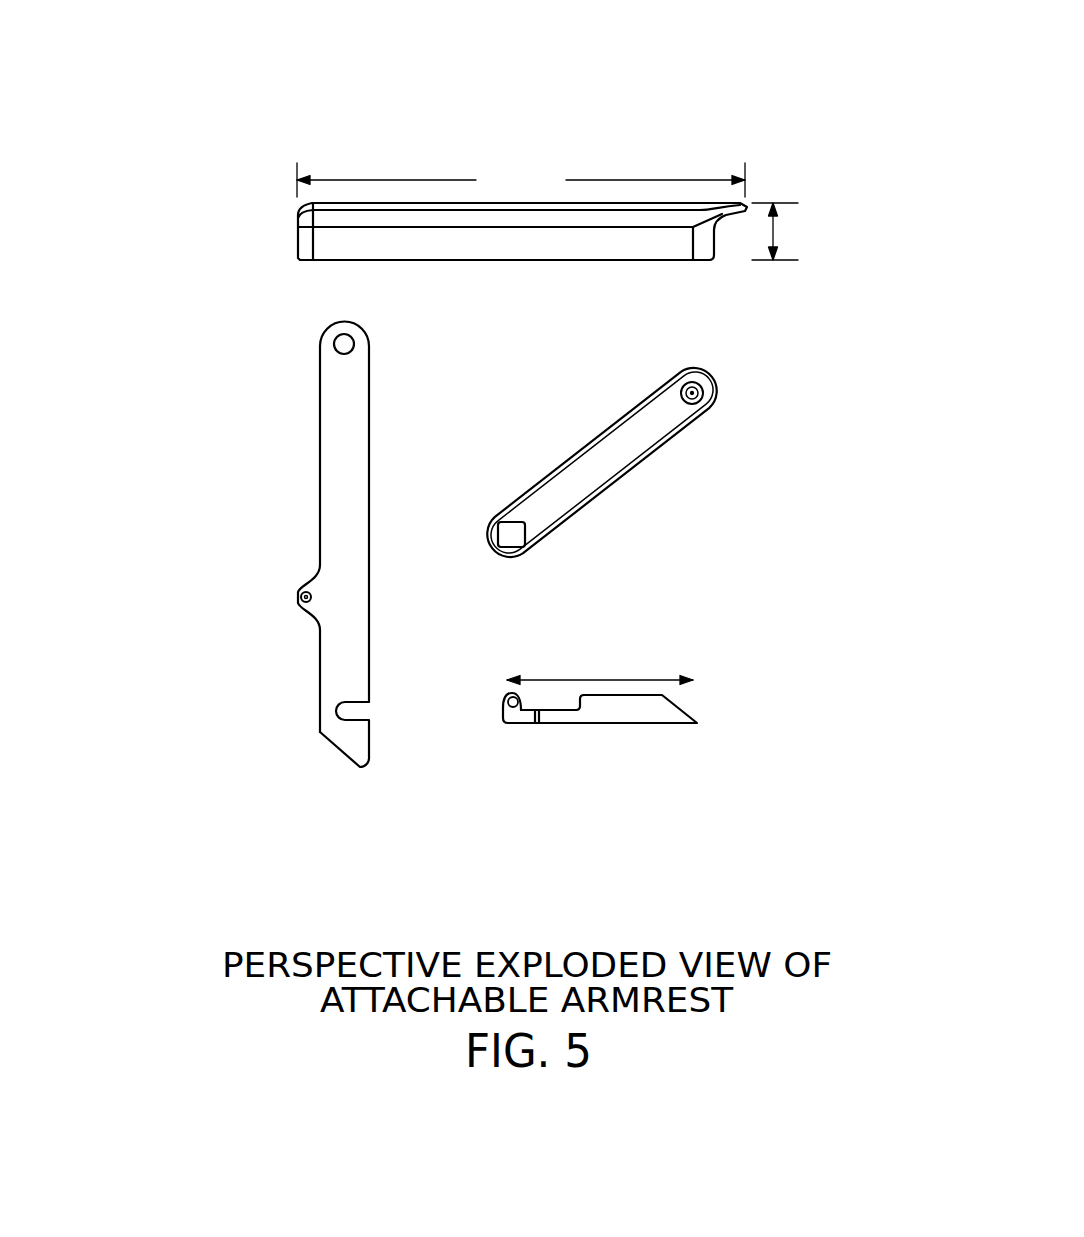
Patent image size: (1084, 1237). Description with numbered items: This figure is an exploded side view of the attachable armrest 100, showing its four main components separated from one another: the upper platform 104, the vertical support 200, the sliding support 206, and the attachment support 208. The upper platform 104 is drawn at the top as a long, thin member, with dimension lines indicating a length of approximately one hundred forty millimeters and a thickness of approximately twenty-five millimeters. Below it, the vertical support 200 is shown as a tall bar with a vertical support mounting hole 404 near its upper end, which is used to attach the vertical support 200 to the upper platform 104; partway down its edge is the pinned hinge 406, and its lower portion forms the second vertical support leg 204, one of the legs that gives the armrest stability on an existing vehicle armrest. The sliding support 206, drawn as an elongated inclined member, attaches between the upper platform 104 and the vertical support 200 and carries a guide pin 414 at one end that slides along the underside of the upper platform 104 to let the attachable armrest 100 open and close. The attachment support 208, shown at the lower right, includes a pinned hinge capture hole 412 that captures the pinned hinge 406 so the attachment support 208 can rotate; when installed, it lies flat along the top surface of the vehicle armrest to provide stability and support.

The attachable armrest 100 is at (750, 40).
The upper platform 104 is at (297, 224).
The vertical support 200 is at (340, 440).
The second vertical support leg 204 is at (340, 749).
The sliding support 206 is at (598, 470).
The attachment support 208 is at (657, 708).
The vertical support mounting hole 404 is at (332, 344).
The pinned hinge 406 is at (293, 580).
The pinned hinge capture hole 412 is at (506, 727).
The guide pin 414 is at (703, 396).